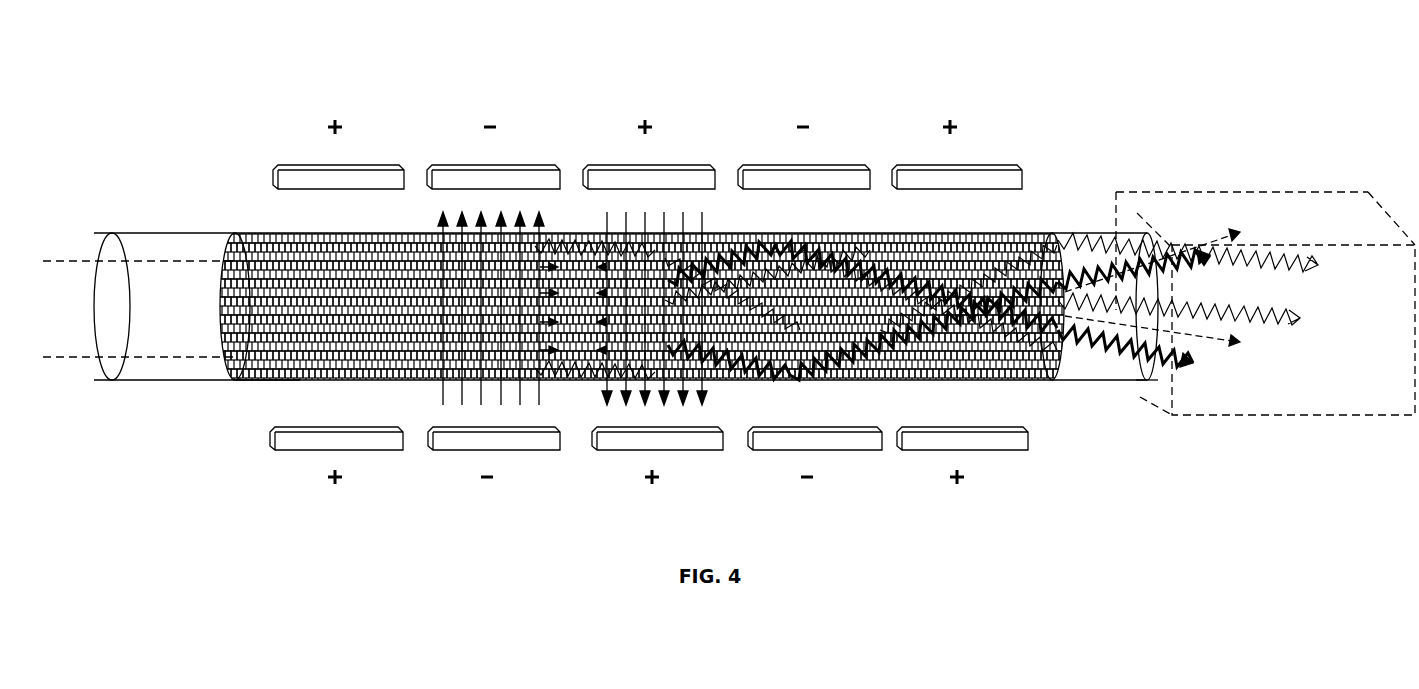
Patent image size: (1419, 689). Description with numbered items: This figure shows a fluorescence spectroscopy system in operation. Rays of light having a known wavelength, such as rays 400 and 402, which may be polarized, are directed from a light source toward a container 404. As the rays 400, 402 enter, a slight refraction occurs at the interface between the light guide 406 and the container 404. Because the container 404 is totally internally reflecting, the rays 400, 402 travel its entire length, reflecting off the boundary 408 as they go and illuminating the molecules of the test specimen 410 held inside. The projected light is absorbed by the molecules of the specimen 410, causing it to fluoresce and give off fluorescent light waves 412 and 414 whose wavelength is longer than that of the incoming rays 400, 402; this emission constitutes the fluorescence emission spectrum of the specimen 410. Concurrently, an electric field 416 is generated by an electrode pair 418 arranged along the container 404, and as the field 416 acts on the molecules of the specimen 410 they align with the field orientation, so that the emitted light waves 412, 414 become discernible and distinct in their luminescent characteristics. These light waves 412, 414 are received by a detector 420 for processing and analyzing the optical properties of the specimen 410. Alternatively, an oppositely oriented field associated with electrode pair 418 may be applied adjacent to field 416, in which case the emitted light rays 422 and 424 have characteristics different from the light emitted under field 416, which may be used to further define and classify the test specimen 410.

The light ray 400 is at (112, 262).
The light ray 402 is at (73, 357).
The container 404 is at (233, 310).
The light guide 406 is at (152, 268).
The boundary 408 is at (260, 363).
The test specimen 410 is at (307, 315).
The light wave 412 is at (1285, 240).
The light wave 414 is at (1273, 323).
The electric field 416 is at (537, 230).
The electrode pair 418 is at (440, 187).
The detector 420 is at (1315, 313).
The emitted light ray 422 is at (1175, 372).
The emitted light ray 424 is at (1157, 238).